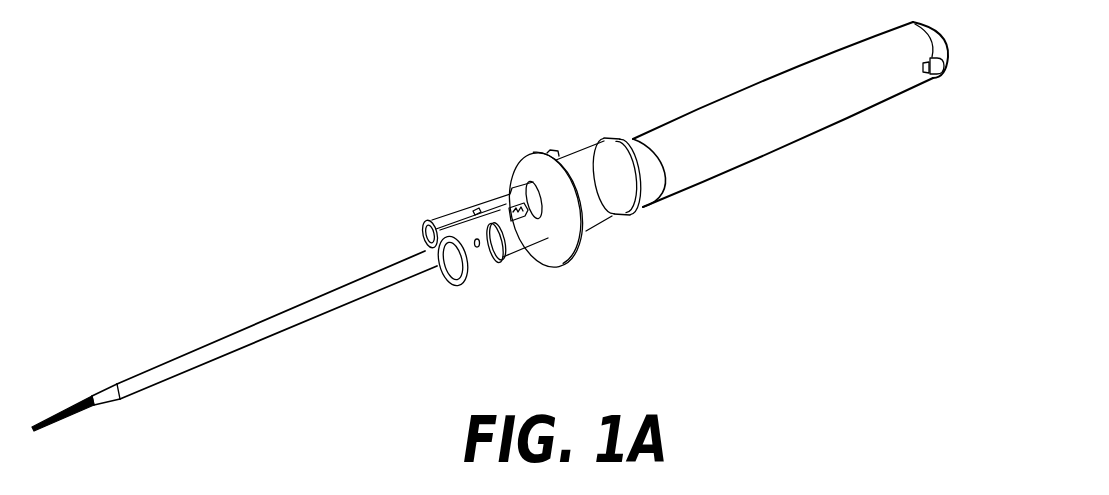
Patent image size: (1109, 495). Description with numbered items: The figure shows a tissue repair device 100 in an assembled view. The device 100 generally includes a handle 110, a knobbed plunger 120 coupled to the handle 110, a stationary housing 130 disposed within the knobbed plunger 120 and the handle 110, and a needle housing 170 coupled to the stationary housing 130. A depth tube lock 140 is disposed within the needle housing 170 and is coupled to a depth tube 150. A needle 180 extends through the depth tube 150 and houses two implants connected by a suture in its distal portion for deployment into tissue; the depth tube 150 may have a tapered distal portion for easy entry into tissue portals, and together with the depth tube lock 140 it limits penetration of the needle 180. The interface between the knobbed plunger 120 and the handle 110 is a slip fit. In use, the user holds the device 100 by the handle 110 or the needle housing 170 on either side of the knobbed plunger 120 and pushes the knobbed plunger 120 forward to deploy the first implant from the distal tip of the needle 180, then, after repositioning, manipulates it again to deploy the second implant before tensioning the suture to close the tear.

The tissue repair device 100 is at (227, 141).
The handle 110 is at (707, 163).
The knobbed plunger 120 is at (597, 210).
The stationary housing 130 is at (532, 184).
The depth tube lock 140 is at (478, 207).
The depth tube 150 is at (270, 320).
The needle housing 170 is at (480, 258).
The needle 180 is at (68, 413).